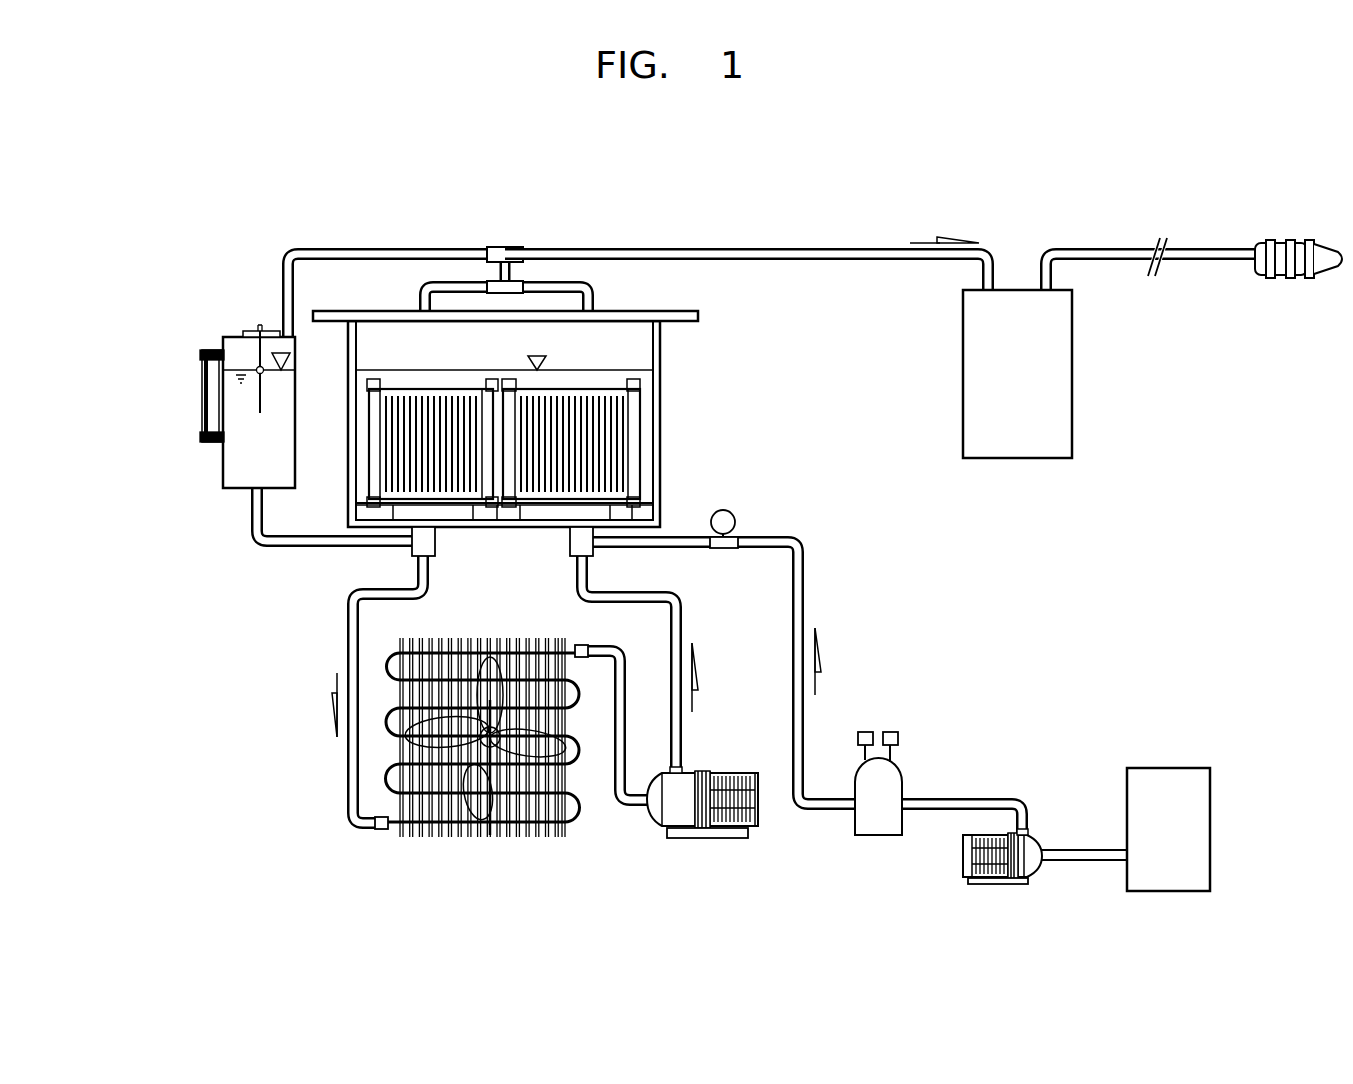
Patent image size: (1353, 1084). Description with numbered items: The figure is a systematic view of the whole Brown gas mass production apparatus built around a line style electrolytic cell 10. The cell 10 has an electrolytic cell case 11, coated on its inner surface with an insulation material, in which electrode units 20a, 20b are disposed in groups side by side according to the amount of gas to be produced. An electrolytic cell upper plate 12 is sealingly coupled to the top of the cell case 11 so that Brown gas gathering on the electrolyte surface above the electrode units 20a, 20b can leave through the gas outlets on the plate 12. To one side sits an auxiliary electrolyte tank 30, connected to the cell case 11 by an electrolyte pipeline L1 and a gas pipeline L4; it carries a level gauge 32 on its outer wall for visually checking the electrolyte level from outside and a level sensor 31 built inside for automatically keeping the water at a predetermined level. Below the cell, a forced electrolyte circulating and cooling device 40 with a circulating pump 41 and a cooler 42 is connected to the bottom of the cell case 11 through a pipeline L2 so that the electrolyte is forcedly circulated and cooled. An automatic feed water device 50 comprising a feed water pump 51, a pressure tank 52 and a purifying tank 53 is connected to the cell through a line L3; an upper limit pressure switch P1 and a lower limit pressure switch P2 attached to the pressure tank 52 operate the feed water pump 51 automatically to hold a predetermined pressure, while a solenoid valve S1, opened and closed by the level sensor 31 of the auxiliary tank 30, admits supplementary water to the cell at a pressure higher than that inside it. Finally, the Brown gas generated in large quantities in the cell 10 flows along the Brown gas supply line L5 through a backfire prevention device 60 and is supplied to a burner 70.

The line style electrolytic cell 10 is at (524, 350).
The electrolytic cell case 11 is at (348, 380).
The electrolytic cell upper plate 12 is at (393, 310).
The electrode unit 20a is at (440, 387).
The electrode unit 20b is at (608, 389).
The auxiliary electrolyte tank 30 is at (192, 378).
The level sensor 31 is at (257, 367).
The level gauge 32 is at (200, 395).
The forced electrolyte circulating and cooling device 40 is at (566, 793).
The circulating pump 41 is at (702, 833).
The cooler 42 is at (483, 822).
The automatic feed water device 50 is at (975, 792).
The feed water pump 51 is at (972, 863).
The pressure tank 52 is at (861, 834).
The purifying tank 53 is at (1152, 785).
The backfire prevention device 60 is at (1035, 448).
The burner 70 is at (1283, 276).
The solenoid valve S1 is at (752, 512).
The upper limit pressure switch P1 is at (865, 730).
The lower limit pressure switch P2 is at (900, 735).
The electrolyte pipeline L1 is at (260, 546).
The pipeline L2 is at (345, 762).
The line L3 is at (802, 541).
The gas pipeline L4 is at (405, 250).
The Brown gas supply line L5 is at (730, 248).